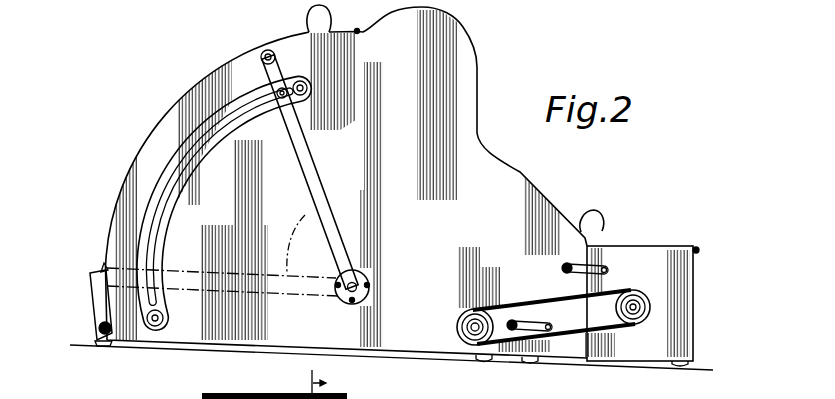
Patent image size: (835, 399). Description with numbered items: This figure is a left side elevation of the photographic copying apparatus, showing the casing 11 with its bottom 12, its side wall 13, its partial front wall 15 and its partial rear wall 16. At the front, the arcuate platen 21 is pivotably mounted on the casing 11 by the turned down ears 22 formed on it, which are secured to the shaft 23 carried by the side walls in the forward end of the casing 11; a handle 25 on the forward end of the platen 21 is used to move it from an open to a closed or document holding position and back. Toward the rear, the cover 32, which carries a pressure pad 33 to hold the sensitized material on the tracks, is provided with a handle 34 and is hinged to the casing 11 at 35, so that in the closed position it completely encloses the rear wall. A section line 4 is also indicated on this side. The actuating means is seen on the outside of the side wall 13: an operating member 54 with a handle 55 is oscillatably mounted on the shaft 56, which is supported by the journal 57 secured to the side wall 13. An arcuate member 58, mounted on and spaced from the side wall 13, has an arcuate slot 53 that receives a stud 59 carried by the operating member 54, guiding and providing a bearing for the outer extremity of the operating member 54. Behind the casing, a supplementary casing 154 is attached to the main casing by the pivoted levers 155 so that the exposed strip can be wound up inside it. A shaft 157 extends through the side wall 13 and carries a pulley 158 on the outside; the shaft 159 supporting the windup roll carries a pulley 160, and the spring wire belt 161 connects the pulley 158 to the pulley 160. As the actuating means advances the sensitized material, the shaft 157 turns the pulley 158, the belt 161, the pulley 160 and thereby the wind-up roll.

The casing 11 is at (478, 62).
The bottom 12 is at (450, 356).
The side wall 13 is at (358, 178).
The partial front wall 15 is at (88, 306).
The partial rear wall 16 is at (547, 308).
The arcuate platen 21 is at (103, 268).
The turned down ears 22 is at (92, 288).
The shaft 23 is at (103, 347).
The handle 25 is at (310, 13).
The cover 32 is at (532, 175).
The pressure pad 33 is at (357, 30).
The handle 34 is at (603, 216).
The hinge 35 is at (250, 393).
The section line 4 is at (309, 383).
The arcuate slot 53 is at (190, 175).
The operating member 54 is at (322, 209).
The handle 55 is at (262, 53).
The shaft 56 is at (370, 279).
The journal 57 is at (335, 305).
The arcuate member 58 is at (167, 236).
The stud 59 is at (283, 99).
The supplementary casing 154 is at (682, 298).
The pivoted levers 155 is at (563, 264).
The shaft 157 is at (456, 325).
The pulley 158 is at (493, 358).
The shaft 159 is at (637, 313).
The pulley 160 is at (650, 317).
The spring wire belt 161 is at (540, 310).